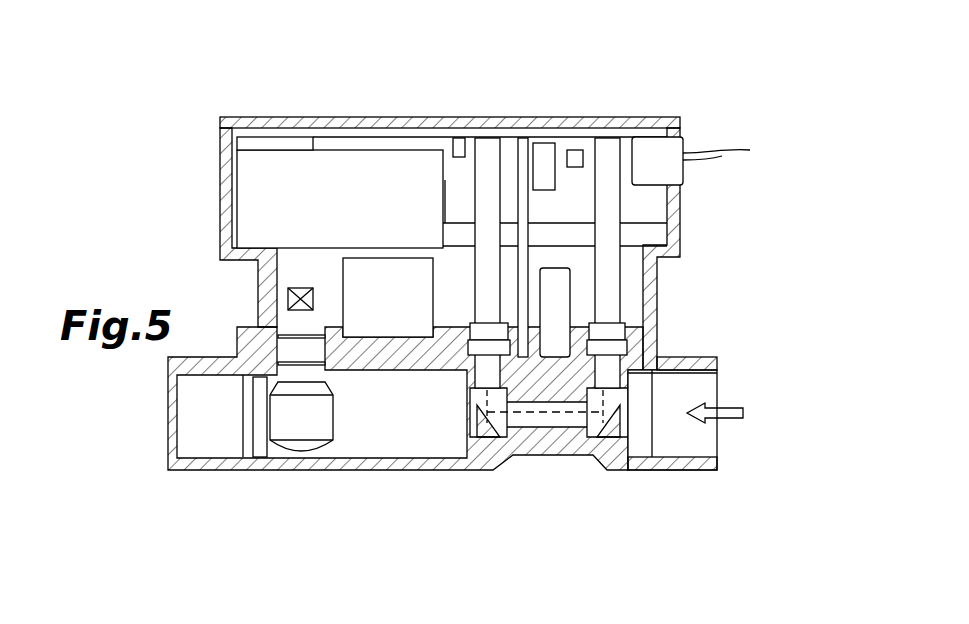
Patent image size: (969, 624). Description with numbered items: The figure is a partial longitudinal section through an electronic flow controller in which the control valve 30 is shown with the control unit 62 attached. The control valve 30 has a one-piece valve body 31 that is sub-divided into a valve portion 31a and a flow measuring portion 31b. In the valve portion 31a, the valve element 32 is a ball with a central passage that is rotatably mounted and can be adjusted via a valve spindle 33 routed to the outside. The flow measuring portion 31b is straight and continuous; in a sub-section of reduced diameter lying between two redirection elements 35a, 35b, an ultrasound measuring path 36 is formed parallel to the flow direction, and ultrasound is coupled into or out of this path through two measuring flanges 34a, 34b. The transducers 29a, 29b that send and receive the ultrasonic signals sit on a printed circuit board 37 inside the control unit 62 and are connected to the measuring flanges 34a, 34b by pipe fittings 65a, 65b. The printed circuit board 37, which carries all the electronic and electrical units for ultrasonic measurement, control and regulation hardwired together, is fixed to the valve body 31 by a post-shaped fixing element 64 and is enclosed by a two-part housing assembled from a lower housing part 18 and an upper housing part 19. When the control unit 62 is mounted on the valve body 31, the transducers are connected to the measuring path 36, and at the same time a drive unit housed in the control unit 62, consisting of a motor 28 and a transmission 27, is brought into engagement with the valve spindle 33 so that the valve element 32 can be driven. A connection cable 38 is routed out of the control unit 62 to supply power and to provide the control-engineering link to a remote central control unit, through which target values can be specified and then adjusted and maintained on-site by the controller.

The lower housing part 18 is at (673, 223).
The upper housing part 19 is at (680, 117).
The transmission 27 is at (263, 173).
The motor 28 is at (288, 140).
The transducer 29a is at (485, 123).
The transducer 29b is at (610, 125).
The control valve 30 is at (163, 130).
The valve body 31 is at (683, 362).
The valve portion 31a is at (380, 476).
The flow measuring portion 31b is at (700, 476).
The valve element 32 is at (303, 443).
The valve spindle 33 is at (288, 310).
The measuring flange 34a is at (465, 337).
The measuring flange 34b is at (620, 337).
The redirection element 35a is at (493, 430).
The redirection element 35b is at (603, 423).
The ultrasound measuring path 36 is at (548, 412).
The printed circuit board 37 is at (585, 137).
The connection cable 38 is at (750, 150).
The control unit 62 is at (217, 317).
The fixing element 64 is at (522, 152).
The pipe fitting 65a is at (487, 200).
The pipe fitting 65b is at (612, 165).